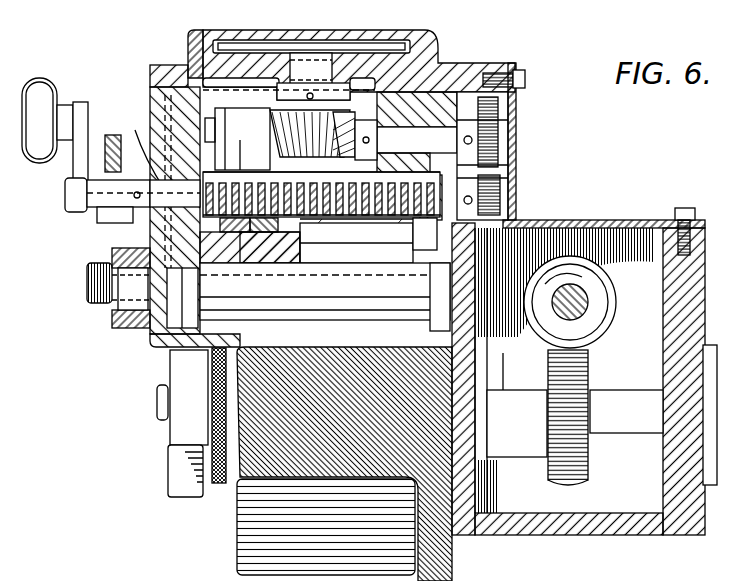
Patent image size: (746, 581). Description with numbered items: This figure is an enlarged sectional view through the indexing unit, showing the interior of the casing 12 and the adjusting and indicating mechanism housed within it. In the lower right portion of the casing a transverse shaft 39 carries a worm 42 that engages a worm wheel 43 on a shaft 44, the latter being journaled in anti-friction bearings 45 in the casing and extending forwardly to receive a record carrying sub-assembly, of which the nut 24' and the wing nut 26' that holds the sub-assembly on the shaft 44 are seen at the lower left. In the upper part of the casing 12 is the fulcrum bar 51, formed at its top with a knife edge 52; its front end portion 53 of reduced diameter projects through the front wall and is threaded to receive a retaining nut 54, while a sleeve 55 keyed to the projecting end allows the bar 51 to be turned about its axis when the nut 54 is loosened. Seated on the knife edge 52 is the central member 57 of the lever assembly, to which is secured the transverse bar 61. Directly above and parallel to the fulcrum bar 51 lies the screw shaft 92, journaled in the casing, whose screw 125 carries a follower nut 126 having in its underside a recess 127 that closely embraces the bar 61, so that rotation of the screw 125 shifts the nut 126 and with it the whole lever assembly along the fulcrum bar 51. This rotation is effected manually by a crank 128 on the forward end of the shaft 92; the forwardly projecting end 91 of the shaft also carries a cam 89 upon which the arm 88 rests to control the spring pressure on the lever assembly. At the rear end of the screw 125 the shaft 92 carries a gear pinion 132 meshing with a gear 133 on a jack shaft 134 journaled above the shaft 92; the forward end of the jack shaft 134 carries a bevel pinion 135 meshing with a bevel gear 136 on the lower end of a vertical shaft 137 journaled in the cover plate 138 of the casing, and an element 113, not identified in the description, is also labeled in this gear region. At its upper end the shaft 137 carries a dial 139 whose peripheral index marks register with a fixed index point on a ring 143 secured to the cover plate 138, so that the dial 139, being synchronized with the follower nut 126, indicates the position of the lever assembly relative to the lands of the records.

The casing 12 is at (238, 550).
The nut 24' is at (208, 434).
The wing nut 26' is at (169, 435).
The transverse shaft 39 is at (590, 303).
The worm 42 is at (598, 278).
The worm wheel 43 is at (590, 368).
The shaft 44 is at (156, 415).
The anti-friction bearings 45 is at (485, 470).
The bar 51 is at (325, 300).
The knife edge 52 is at (367, 265).
The front end portion 53 is at (135, 310).
The retaining nut 54 is at (90, 300).
The sleeve 55 is at (116, 325).
The central member 57 is at (265, 250).
The transverse bar 61 is at (302, 248).
The arm 88 is at (110, 135).
The cam 89 is at (116, 224).
The forwardly projecting end 91 is at (66, 197).
The screw shaft 92 is at (142, 151).
The gear 113 is at (262, 150).
The screw 125 is at (345, 221).
The follower nut 126 is at (288, 178).
The recess 127 is at (240, 232).
The crank 128 is at (75, 165).
The gear pinion 132 is at (500, 182).
The gear 133 is at (497, 108).
The jack shaft 134 is at (418, 148).
The bevel pinion 135 is at (338, 149).
The bevel gear 136 is at (272, 110).
The vertical shaft 137 is at (320, 68).
The cover plate 138 is at (440, 70).
The dial 139 is at (438, 47).
The ring 143 is at (190, 34).